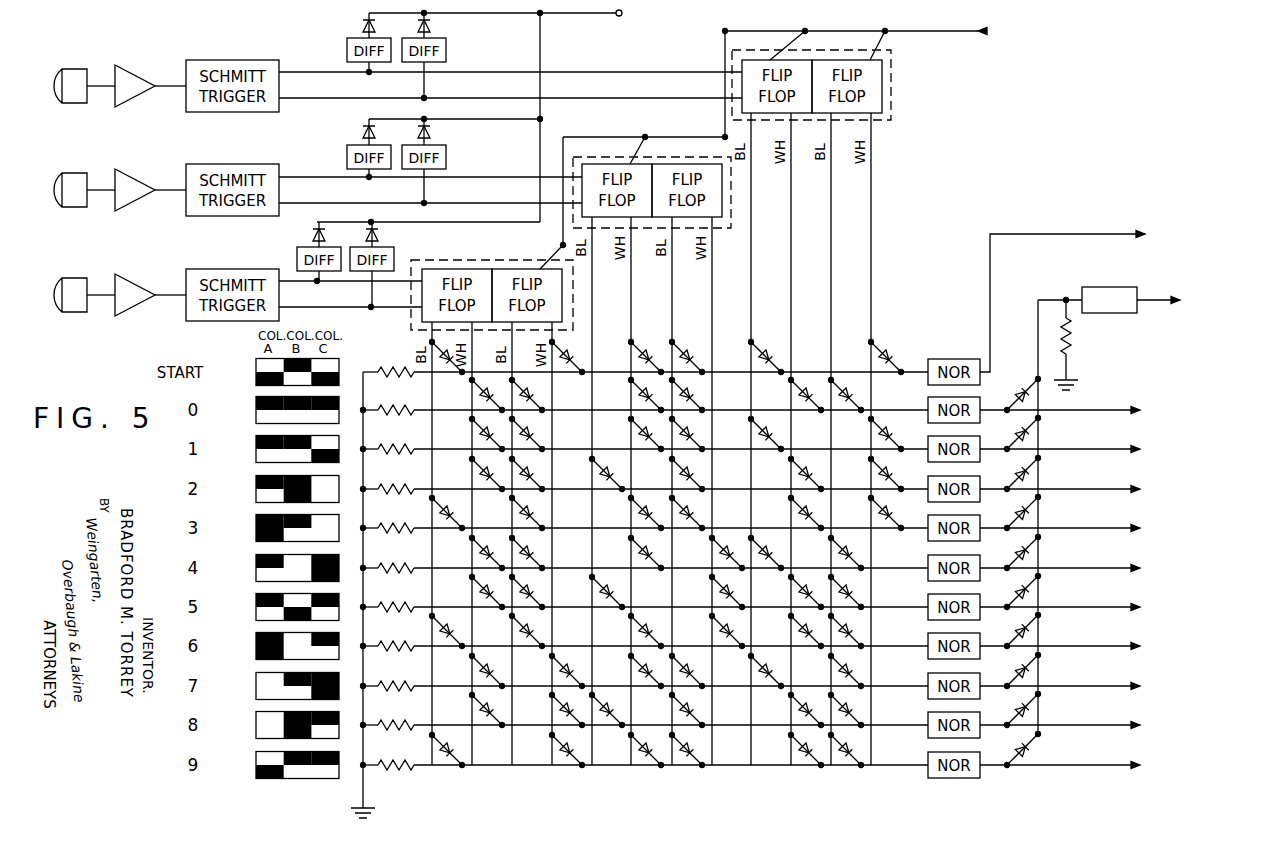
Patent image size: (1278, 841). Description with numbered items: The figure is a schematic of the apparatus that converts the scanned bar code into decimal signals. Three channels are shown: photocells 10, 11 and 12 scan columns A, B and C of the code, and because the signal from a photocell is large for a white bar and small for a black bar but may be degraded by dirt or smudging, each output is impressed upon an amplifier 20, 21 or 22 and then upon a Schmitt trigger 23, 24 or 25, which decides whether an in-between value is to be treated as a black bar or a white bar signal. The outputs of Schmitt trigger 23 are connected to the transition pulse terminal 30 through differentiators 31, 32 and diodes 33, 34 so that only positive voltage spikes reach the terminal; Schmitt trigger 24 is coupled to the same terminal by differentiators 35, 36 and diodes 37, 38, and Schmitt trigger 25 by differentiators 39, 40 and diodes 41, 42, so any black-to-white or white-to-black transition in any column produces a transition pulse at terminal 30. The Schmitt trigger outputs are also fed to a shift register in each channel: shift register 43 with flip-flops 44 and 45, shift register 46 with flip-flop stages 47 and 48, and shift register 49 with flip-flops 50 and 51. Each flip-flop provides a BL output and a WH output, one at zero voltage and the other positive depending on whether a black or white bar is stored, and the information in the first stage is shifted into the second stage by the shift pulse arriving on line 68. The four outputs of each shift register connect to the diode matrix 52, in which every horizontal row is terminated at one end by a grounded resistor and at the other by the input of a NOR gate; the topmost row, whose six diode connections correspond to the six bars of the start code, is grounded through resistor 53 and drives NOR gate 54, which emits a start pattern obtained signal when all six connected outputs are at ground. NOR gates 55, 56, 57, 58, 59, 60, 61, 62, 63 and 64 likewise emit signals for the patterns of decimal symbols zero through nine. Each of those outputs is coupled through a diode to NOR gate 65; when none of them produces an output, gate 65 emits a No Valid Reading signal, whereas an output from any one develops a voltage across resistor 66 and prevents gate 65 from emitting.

The photocell 10 is at (80, 278).
The photocell 11 is at (80, 173).
The photocell 12 is at (80, 69).
The amplifier 20 is at (150, 265).
The amplifier 21 is at (146, 177).
The amplifier 22 is at (150, 55).
The Schmitt trigger 23 is at (232, 269).
The Schmitt trigger 24 is at (216, 165).
The Schmitt trigger 25 is at (258, 60).
The transition pulse terminal 30 is at (619, 18).
The differentiator 31 is at (297, 262).
The differentiator 32 is at (394, 260).
The diode 33 is at (313, 238).
The diode 34 is at (378, 237).
The differentiator 35 is at (347, 156).
The differentiator 36 is at (446, 157).
The diode 37 is at (362, 133).
The diode 38 is at (432, 132).
The differentiator 39 is at (347, 57).
The differentiator 40 is at (440, 61).
The diode 41 is at (361, 27).
The diode 42 is at (432, 27).
The shift register 43 is at (492, 278).
The flip-flop 44 is at (455, 269).
The flip-flop 45 is at (543, 268).
The shift register 46 is at (652, 182).
The flip-flop stage 47 is at (609, 164).
The flip-flop stage 48 is at (725, 137).
The shift register 49 is at (811, 75).
The flip-flop 50 is at (778, 60).
The flip-flop 51 is at (845, 60).
The diode matrix 52 is at (639, 465).
The resistor 53 is at (396, 368).
The NOR gate 54 is at (936, 359).
The NOR gate 55 is at (928, 406).
The NOR gate 56 is at (928, 445).
The NOR gate 57 is at (928, 485).
The NOR gate 58 is at (928, 524).
The NOR gate 59 is at (928, 564).
The NOR gate 60 is at (928, 603).
The NOR gate 61 is at (928, 642).
The NOR gate 62 is at (928, 682).
The NOR gate 63 is at (928, 721).
The NOR gate 64 is at (928, 761).
The NOR gate 65 is at (1114, 287).
The resistor 66 is at (1069, 338).
The line 68 is at (932, 31).